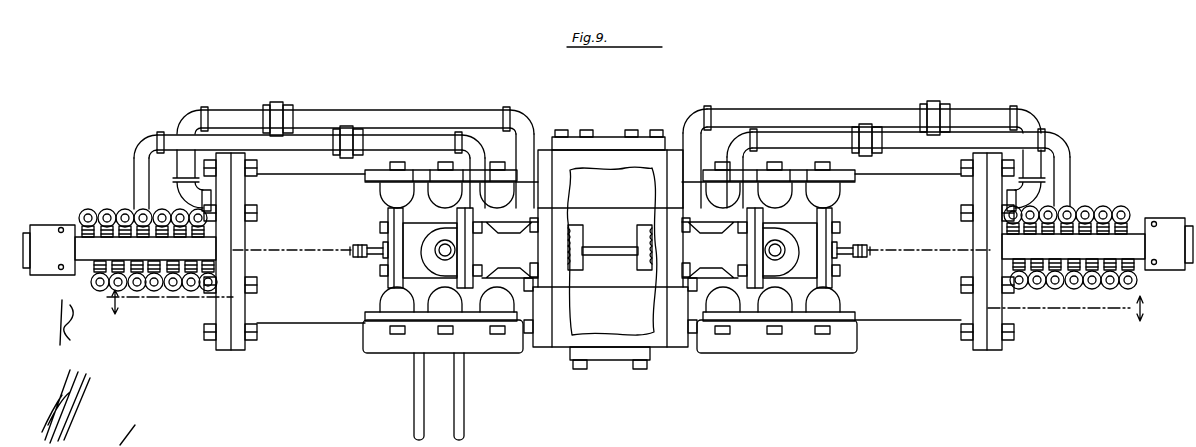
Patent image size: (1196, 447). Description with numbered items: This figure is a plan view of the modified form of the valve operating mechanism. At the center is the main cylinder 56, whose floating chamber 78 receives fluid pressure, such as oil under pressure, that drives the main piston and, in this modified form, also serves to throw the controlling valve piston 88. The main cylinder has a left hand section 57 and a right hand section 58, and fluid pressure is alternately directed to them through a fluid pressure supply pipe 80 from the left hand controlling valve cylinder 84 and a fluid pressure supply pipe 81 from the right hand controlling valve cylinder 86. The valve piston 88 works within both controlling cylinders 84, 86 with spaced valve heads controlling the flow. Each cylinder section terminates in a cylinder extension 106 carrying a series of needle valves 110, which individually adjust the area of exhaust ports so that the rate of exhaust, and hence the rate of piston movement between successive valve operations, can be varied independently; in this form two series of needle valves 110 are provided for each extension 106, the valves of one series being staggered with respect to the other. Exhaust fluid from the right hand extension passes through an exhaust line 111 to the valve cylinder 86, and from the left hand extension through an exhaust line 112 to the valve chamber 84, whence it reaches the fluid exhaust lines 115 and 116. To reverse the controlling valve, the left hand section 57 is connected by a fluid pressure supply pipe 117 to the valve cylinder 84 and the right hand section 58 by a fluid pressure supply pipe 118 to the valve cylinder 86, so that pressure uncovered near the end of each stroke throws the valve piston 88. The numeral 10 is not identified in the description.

The strip 10 is at (632, 305).
The main cylinder 56 is at (564, 298).
The left hand cylinder section 57 is at (318, 292).
The right hand cylinder section 58 is at (937, 300).
The floating chamber 78 is at (612, 251).
The fluid pressure supply pipe 80 is at (362, 117).
The fluid pressure supply pipe 81 is at (905, 103).
The left hand controlling valve cylinder 84 is at (450, 301).
The right hand controlling valve cylinder 86 is at (769, 257).
The valve piston 88 is at (617, 249).
The cylinder extension 106 is at (50, 236).
The needle valves 110 is at (140, 212).
The exhaust line 111 is at (921, 142).
The exhaust line 112 is at (307, 138).
The fluid exhaust line 115 is at (437, 247).
The fluid exhaust line 116 is at (781, 241).
The fluid pressure supply pipe 117 is at (358, 226).
The fluid pressure supply pipe 118 is at (860, 242).